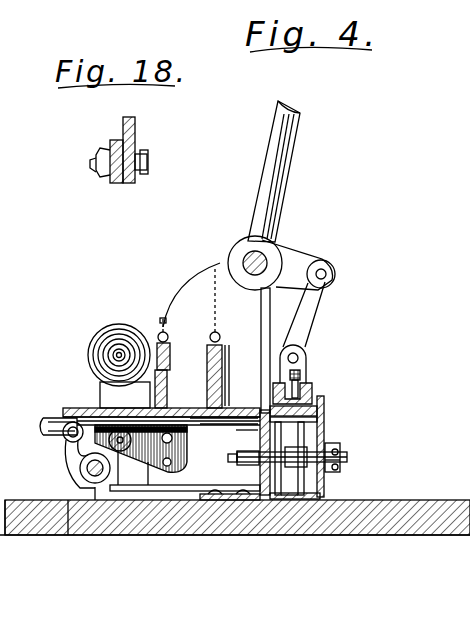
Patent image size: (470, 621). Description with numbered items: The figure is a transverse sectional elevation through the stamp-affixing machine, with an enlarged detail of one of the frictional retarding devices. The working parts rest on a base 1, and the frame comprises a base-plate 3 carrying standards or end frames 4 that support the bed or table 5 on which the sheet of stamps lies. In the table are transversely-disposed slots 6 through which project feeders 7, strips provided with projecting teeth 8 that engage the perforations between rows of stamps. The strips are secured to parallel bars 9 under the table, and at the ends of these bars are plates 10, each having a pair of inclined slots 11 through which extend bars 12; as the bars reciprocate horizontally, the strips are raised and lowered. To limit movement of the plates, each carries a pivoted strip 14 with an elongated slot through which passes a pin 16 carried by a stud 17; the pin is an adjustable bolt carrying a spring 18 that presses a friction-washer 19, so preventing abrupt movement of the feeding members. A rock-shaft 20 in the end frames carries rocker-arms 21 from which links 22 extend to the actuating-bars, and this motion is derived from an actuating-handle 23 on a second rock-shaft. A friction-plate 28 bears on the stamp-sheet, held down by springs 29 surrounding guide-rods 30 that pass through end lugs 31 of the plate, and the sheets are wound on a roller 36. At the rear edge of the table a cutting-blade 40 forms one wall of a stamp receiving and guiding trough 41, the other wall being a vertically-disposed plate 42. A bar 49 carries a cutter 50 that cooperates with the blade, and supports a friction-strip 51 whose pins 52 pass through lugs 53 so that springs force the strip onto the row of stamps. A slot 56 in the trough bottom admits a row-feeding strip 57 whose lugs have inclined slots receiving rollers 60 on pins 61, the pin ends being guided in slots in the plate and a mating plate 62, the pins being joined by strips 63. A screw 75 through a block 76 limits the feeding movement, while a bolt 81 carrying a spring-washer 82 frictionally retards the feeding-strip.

In FIG. 4, the base 1 is at (435, 505).
In FIG. 4, the base-plate 3 is at (205, 505).
In FIG. 4, the standards or end frames 4 is at (249, 350).
In FIG. 4, the bed or table 5 is at (78, 412).
In FIG. 4, the transversely-disposed slots 6 is at (229, 440).
In FIG. 4, the feeders 7 is at (189, 444).
In FIG. 4, the projecting teeth 8 is at (224, 427).
In FIG. 4, the parallel bars 9 is at (90, 408).
In FIG. 4, the plates 10 is at (152, 530).
In FIG. 4, the inclined slots 11 is at (186, 463).
In FIG. 4, the bars 12 is at (168, 370).
In FIG. 18, the pivoted strip 14 is at (116, 140).
In FIG. 4, the pivoted strip 14 is at (66, 438).
In FIG. 18, the pin 16 is at (148, 165).
In FIG. 4, the pin 16 is at (68, 450).
In FIG. 18, the stud 17 is at (135, 128).
In FIG. 4, the stud 17 is at (56, 416).
In FIG. 18, the spring 18 is at (108, 153).
In FIG. 4, the spring 18 is at (70, 500).
In FIG. 18, the friction-washer 19 is at (107, 174).
In FIG. 4, the friction-washer 19 is at (80, 472).
In FIG. 4, the rock-shaft 20 is at (96, 500).
In FIG. 4, the rocker-arms 21 is at (36, 528).
In FIG. 4, the links 22 is at (161, 404).
In FIG. 4, the actuating-handle 23 is at (280, 152).
In FIG. 4, the friction-plate 28 is at (238, 374).
In FIG. 4, the springs 29 is at (170, 337).
In FIG. 4, the guide-rods 30 is at (215, 266).
In FIG. 4, the end lugs 31 is at (236, 356).
In FIG. 4, the roller 36 is at (117, 324).
In FIG. 4, the cutting-blade 40 is at (246, 431).
In FIG. 4, the stamp receiving and guiding trough 41 is at (324, 408).
In FIG. 4, the vertically-disposed plate 42 is at (324, 396).
In FIG. 4, the bar 49 is at (313, 388).
In FIG. 4, the cutter 50 is at (276, 352).
In FIG. 4, the friction-strip 51 is at (320, 428).
In FIG. 4, the pins 52 is at (312, 348).
In FIG. 4, the lugs 53 is at (301, 376).
In FIG. 4, the slot 56 is at (330, 488).
In FIG. 4, the row-feeding strip 57 is at (300, 470).
In FIG. 4, the rollers 60 is at (305, 500).
In FIG. 4, the pins 61 is at (324, 440).
In FIG. 4, the mating plate 62 is at (276, 495).
In FIG. 4, the strips 63 is at (232, 462).
In FIG. 4, the screw 75 is at (342, 455).
In FIG. 4, the block 76 is at (342, 466).
In FIG. 4, the bolt 81 is at (230, 481).
In FIG. 4, the spring-washer 82 is at (295, 495).